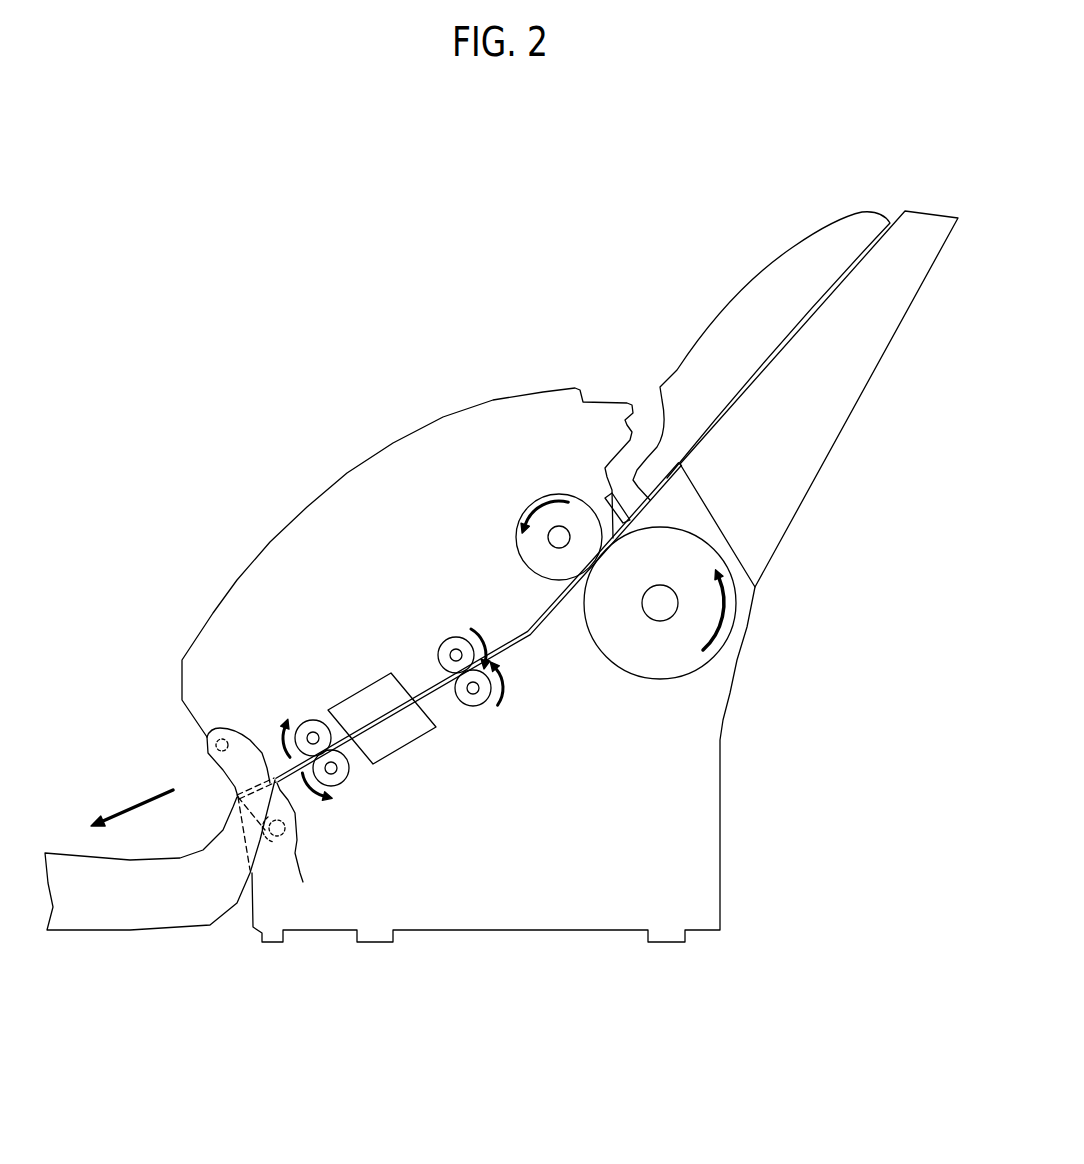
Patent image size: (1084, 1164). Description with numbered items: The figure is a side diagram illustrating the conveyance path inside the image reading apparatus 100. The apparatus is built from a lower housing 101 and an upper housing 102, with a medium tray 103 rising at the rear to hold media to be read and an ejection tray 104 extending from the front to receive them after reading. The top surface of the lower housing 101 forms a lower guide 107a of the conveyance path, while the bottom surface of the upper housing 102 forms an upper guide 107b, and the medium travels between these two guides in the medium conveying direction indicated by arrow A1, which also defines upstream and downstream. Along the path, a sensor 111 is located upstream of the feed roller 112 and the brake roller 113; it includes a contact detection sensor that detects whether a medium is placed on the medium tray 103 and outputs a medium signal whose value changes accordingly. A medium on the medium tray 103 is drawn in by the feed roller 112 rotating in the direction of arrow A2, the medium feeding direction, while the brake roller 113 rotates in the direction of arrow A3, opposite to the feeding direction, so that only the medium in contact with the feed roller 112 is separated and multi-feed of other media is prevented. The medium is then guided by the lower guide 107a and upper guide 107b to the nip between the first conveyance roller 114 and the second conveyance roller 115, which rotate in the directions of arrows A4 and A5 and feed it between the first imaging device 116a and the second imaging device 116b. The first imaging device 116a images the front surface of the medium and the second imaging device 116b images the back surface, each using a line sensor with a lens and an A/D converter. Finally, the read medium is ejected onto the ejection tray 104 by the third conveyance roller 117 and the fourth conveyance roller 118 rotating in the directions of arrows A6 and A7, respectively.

The image reading apparatus 100 is at (250, 404).
The lower housing 101 is at (705, 810).
The upper housing 102 is at (257, 590).
The medium tray 103 is at (849, 367).
The ejection tray 104 is at (102, 903).
The lower guide 107a is at (299, 848).
The upper guide 107b is at (266, 745).
The sensor 111 is at (606, 497).
The feed roller 112 is at (660, 648).
The brake roller 113 is at (518, 534).
The first conveyance roller 114 is at (482, 708).
The second conveyance roller 115 is at (444, 638).
The first imaging device 116a is at (400, 744).
The second imaging device 116b is at (357, 693).
The third conveyance roller 117 is at (343, 784).
The fourth conveyance roller 118 is at (308, 720).
The medium conveying direction A1 is at (132, 793).
The feed roller rotation direction A2 is at (706, 610).
The brake roller rotation direction A3 is at (544, 531).
The first conveyance roller rotation direction A4 is at (511, 683).
The second conveyance roller rotation direction A5 is at (484, 636).
The third conveyance roller rotation direction A6 is at (320, 801).
The fourth conveyance roller rotation direction A7 is at (285, 727).